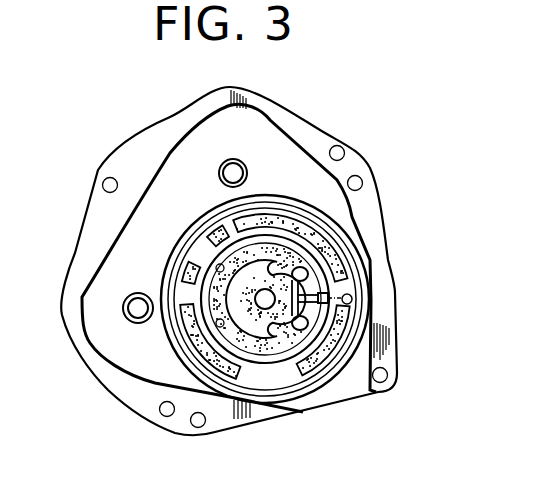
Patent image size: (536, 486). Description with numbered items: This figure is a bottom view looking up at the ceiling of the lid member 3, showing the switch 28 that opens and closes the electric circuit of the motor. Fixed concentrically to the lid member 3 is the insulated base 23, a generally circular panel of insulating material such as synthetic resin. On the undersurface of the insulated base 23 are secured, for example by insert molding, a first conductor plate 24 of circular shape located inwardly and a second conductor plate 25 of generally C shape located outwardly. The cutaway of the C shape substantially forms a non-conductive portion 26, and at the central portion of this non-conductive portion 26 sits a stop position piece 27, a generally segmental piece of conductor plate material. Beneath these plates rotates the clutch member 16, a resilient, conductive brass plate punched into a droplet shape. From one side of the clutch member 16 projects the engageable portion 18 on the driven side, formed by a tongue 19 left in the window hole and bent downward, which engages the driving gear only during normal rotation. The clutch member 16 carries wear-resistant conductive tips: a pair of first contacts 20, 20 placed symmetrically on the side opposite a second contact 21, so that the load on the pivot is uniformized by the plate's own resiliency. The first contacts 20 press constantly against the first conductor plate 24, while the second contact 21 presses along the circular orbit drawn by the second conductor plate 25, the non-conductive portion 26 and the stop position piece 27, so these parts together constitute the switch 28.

The lid member 3 is at (290, 108).
The clutch member 16 is at (293, 362).
The engageable portion on the driven side 18 is at (330, 297).
The tongue 19 is at (312, 278).
The first contacts 20 is at (217, 266).
The second contact 21 is at (353, 299).
The insulated base 23 is at (203, 217).
The first conductor plate 24 is at (232, 236).
The second conductor plate 25 is at (207, 247).
The non-conductive portion 26 is at (183, 293).
The stop position piece 27 is at (183, 272).
The switch 28 is at (302, 216).